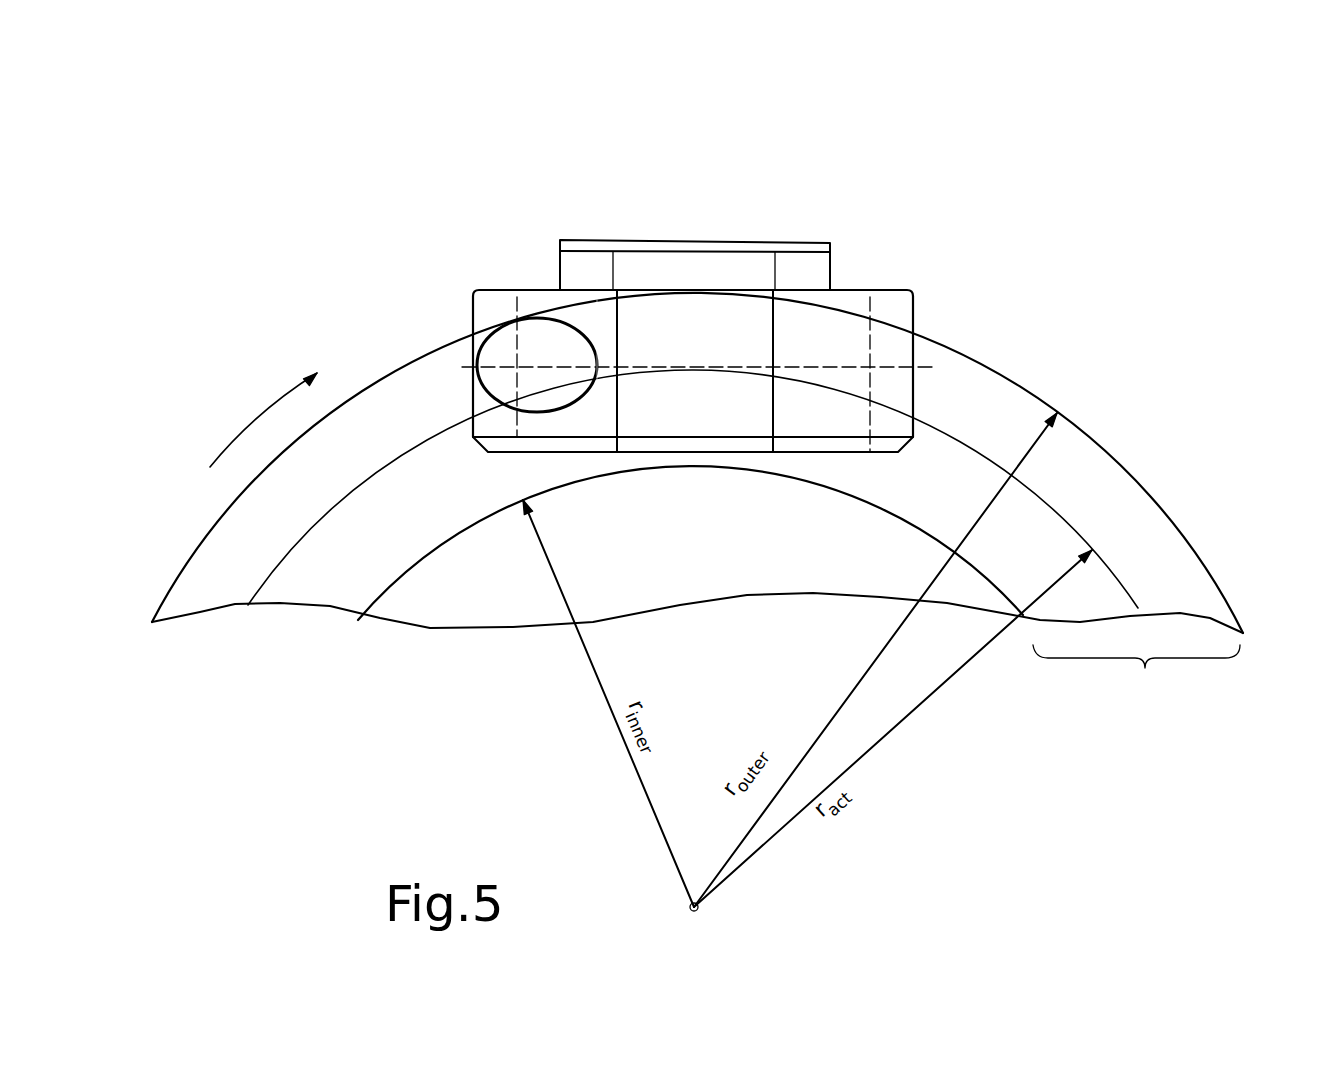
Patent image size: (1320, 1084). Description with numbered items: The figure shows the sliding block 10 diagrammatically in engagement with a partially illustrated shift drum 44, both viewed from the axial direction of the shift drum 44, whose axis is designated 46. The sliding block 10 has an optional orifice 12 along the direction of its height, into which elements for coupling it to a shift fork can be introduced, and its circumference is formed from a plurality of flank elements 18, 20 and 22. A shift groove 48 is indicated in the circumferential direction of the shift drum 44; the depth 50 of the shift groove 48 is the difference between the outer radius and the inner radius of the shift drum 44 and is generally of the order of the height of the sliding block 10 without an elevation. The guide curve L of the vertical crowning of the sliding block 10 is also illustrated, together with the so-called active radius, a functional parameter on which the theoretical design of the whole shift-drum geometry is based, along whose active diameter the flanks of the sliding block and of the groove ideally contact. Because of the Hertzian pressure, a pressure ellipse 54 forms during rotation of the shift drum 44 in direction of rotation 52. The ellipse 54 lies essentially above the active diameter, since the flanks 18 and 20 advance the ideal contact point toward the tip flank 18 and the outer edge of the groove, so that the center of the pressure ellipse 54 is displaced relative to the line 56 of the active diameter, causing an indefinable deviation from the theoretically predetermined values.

The sliding block 10 is at (482, 258).
The orifice 12 is at (698, 225).
The tip flank 18 is at (476, 290).
The flank element 20 is at (595, 328).
The flank element 22 is at (728, 330).
The shift drum 44 is at (480, 577).
The axis of the shift drum 46 is at (702, 926).
The shift groove 48 is at (233, 552).
The depth of the shift groove 50 is at (1136, 674).
The direction of rotation 52 is at (236, 435).
The pressure ellipse 54 is at (477, 397).
The line of the active diameter 56 is at (1068, 520).
The guide curve L is at (827, 370).